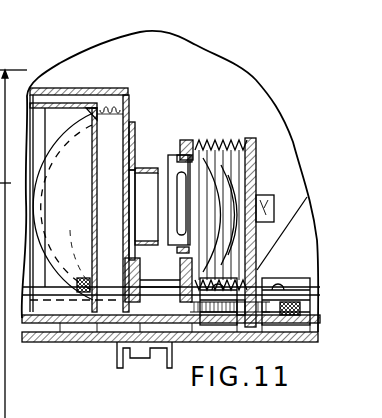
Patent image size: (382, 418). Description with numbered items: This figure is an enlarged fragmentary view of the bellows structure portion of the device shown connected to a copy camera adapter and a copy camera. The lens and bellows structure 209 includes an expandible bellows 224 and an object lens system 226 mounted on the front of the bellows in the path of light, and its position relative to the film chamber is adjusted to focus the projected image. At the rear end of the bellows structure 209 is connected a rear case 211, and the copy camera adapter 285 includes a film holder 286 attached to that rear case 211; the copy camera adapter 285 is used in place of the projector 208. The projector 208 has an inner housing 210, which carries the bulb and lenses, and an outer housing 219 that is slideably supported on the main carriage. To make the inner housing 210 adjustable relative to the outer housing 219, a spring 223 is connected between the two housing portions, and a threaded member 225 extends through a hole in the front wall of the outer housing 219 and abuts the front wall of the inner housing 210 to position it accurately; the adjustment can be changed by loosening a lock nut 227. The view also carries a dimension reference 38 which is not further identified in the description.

The dimension 38 is at (13, 244).
The projector 208 is at (80, 91).
The lens and bellows structure 209 is at (211, 138).
The inner housing 210 is at (42, 95).
The rear case 211 is at (174, 141).
The outer housing 219 is at (62, 89).
The spring 223 is at (107, 108).
The expandible bellows 224 is at (246, 140).
The member 225 is at (115, 310).
The object lens system 226 is at (258, 196).
The lock nut 227 is at (263, 278).
The copy camera adapter 285 is at (172, 249).
The film holder 286 is at (172, 206).